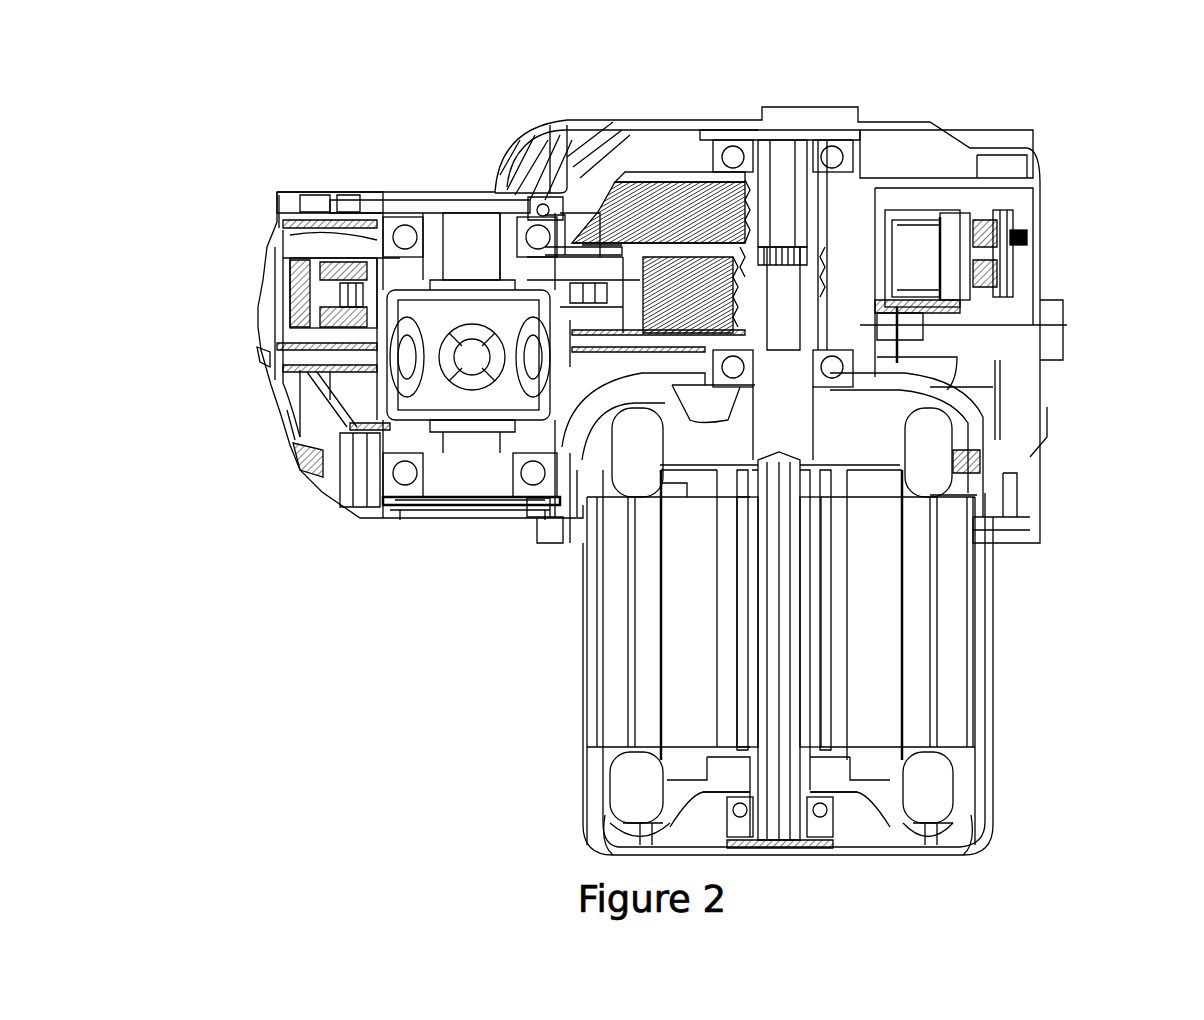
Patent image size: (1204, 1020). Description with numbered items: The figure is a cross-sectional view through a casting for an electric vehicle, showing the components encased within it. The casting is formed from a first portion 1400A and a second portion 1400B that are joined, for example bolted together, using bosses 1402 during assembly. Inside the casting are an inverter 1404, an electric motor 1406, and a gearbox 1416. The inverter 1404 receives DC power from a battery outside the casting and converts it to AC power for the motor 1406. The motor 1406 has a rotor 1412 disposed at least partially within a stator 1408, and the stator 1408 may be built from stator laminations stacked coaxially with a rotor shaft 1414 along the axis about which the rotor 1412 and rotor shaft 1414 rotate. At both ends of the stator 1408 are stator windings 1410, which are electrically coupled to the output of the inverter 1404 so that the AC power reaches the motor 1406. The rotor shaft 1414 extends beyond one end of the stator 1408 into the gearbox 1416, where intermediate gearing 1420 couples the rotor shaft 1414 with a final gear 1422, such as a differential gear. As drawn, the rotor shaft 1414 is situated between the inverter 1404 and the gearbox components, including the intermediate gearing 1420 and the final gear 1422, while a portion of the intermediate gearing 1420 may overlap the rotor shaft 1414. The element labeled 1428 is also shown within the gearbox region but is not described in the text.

The gearbox 1416 is at (807, 72).
The inverter 1404 is at (923, 237).
The electric motor 1406 is at (1075, 853).
The first portion 1400A is at (273, 243).
The second portion 1400B is at (290, 417).
The bosses 1402 is at (268, 338).
The intermediate gearing 1420 is at (690, 300).
The final gear 1422 is at (447, 313).
The gearbox member 1428 is at (489, 265).
The rotor shaft 1414 is at (760, 413).
The stator windings 1410 is at (632, 468).
The stator 1408 is at (630, 608).
The rotor 1412 is at (692, 692).